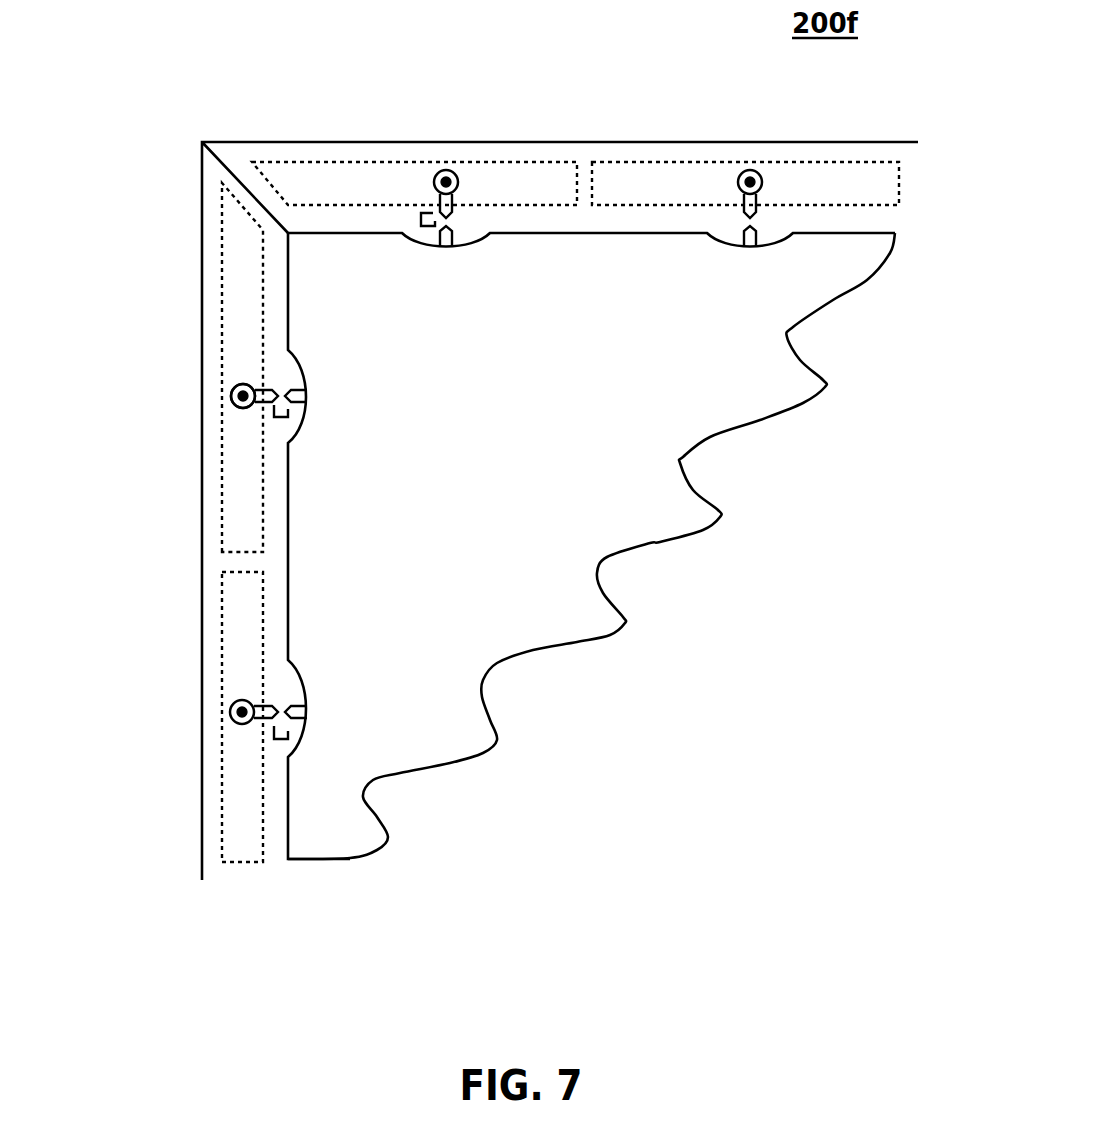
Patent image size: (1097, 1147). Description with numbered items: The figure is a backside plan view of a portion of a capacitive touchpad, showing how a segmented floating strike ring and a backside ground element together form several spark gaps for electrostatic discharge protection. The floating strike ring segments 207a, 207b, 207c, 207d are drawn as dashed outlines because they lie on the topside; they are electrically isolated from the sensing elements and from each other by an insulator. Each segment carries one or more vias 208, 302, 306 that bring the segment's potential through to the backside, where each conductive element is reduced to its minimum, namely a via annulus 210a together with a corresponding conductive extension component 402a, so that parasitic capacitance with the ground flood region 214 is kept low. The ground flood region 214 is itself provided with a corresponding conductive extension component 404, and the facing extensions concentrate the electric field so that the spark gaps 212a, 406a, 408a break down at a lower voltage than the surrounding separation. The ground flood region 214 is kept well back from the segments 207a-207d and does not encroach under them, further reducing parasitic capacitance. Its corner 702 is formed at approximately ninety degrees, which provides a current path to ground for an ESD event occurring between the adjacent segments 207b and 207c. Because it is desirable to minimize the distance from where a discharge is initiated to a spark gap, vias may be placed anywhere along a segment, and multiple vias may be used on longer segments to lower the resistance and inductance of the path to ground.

The corner 702 is at (218, 155).
The floating strike ring segment 207a is at (688, 162).
The floating strike ring segment 207b is at (295, 162).
The floating strike ring segment 207c is at (222, 222).
The floating strike ring segment 207d is at (222, 650).
The via 208 is at (219, 397).
The via annulus 210a is at (233, 400).
The spark gap 212a is at (280, 410).
The ground flood region 214 is at (705, 440).
The via 302 is at (233, 722).
The via 306 is at (458, 178).
The conductive extension component 402a is at (278, 396).
The conductive extension component 404 is at (298, 390).
The spark gap 406a is at (280, 740).
The spark gap 408a is at (413, 215).